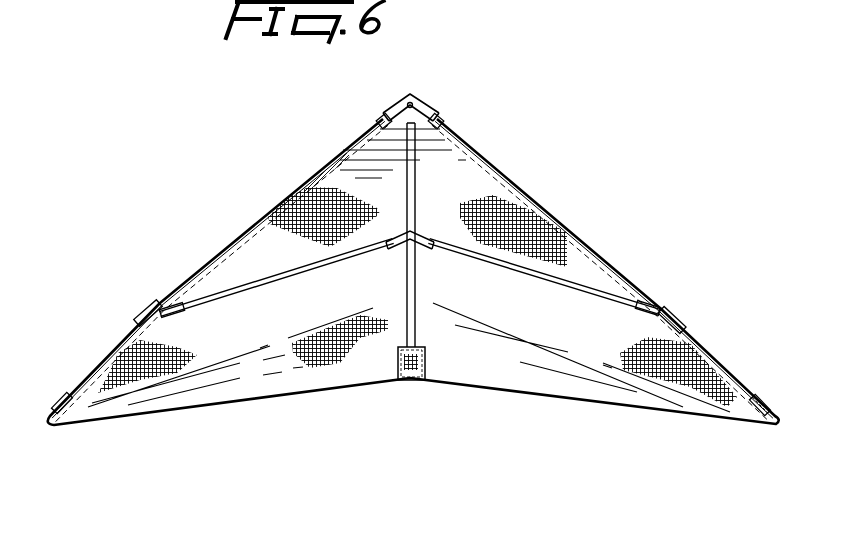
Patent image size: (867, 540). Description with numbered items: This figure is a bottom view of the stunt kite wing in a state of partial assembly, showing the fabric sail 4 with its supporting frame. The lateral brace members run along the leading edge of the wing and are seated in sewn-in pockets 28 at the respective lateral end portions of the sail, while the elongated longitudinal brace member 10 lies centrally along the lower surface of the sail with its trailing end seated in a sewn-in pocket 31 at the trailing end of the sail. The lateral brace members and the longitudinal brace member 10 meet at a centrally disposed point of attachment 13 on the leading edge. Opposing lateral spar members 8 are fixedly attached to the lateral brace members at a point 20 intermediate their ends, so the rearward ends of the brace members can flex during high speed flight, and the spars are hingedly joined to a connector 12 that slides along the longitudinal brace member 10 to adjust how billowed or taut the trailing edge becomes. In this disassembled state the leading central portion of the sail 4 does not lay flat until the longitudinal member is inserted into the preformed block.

The fabric sail 4 is at (603, 405).
The lateral spar members 8 is at (260, 283).
The longitudinal brace member 10 is at (415, 187).
The connector 12 is at (433, 236).
The point of attachment 13 is at (417, 101).
The point of attachment of lateral spar members to lateral brace members 20 is at (148, 310).
The sewn-in pockets 28 is at (60, 425).
The sewn-in pocket 31 is at (408, 382).